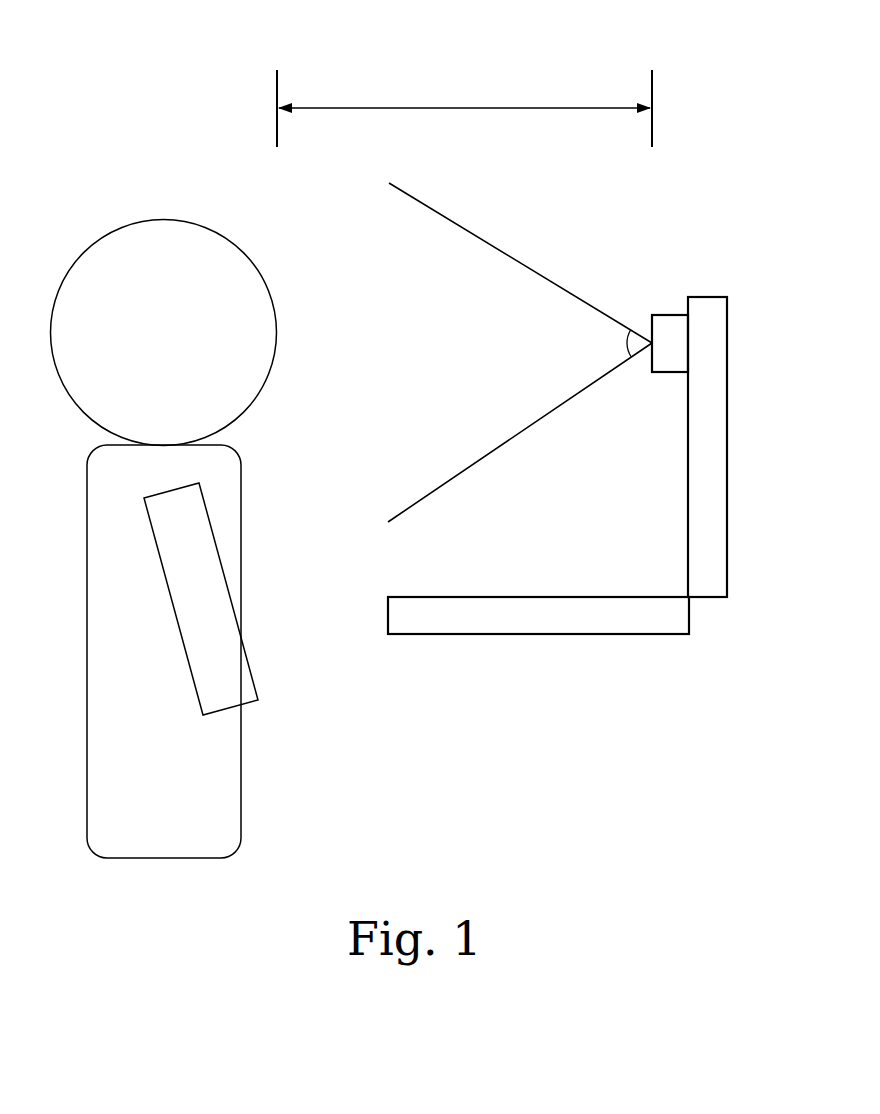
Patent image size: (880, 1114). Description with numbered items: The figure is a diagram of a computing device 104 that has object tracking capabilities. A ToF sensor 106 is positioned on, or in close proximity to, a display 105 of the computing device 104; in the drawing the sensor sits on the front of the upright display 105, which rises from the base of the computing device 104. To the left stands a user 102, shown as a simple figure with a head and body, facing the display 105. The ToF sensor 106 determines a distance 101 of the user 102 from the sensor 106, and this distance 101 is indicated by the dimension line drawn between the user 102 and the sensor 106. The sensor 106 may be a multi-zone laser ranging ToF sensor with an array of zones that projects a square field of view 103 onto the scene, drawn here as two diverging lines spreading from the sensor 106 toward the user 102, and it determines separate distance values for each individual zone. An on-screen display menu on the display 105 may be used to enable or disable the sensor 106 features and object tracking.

The distance 101 is at (463, 108).
The user 102 is at (163, 220).
The field of view 103 is at (627, 347).
The computing device 104 is at (539, 645).
The display 105 is at (687, 408).
The ToF sensor 106 is at (670, 315).